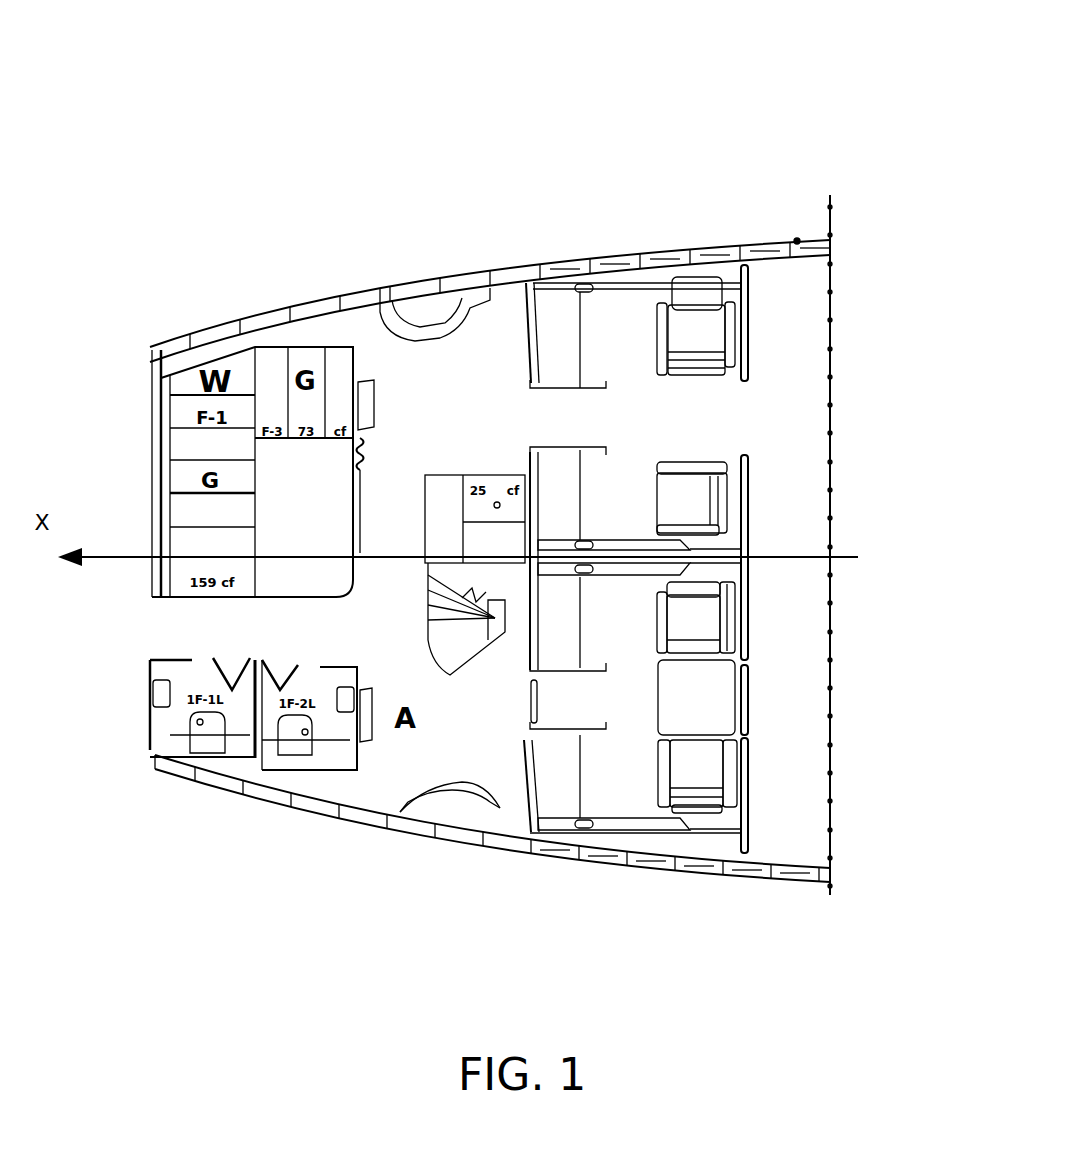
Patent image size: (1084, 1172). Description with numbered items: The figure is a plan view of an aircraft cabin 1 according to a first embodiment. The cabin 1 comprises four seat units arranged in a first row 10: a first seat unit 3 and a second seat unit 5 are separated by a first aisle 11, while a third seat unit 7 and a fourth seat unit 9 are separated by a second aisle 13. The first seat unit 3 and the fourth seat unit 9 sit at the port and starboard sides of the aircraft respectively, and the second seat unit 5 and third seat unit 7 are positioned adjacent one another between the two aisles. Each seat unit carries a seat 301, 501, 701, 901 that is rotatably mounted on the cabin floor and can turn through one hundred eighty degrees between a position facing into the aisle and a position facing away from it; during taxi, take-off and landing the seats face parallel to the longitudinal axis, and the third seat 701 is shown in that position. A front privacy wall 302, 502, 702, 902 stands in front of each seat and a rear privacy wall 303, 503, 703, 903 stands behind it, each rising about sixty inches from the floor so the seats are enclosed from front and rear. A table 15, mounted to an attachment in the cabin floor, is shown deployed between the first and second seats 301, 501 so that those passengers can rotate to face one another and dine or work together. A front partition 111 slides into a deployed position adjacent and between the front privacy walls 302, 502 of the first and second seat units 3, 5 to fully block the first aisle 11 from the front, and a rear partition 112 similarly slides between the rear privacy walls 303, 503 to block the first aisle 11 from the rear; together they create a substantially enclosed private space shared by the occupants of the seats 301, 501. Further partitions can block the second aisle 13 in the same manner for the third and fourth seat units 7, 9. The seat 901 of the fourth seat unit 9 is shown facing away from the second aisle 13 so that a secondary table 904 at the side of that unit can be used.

The aircraft cabin 1 is at (480, 110).
The first row 10 is at (605, 228).
The first aisle 11 is at (620, 695).
The second aisle 13 is at (625, 425).
The table 15 is at (710, 705).
The front partition 111 is at (533, 706).
The rear partition 112 is at (748, 685).
The first seat unit 3 is at (748, 805).
The seat 301 is at (705, 762).
The front privacy wall 302 is at (537, 705).
The rear privacy wall 303 is at (748, 780).
The second seat unit 5 is at (748, 585).
The seat 501 is at (705, 632).
The front privacy wall 502 is at (533, 617).
The rear privacy wall 503 is at (748, 610).
The third seat unit 7 is at (748, 470).
The seat 701 is at (708, 497).
The front privacy wall 702 is at (537, 498).
The rear privacy wall 703 is at (748, 527).
The fourth seat unit 9 is at (740, 302).
The seat 901 is at (710, 338).
The front privacy wall 902 is at (527, 283).
The rear privacy wall 903 is at (748, 362).
The secondary table 904 is at (700, 292).